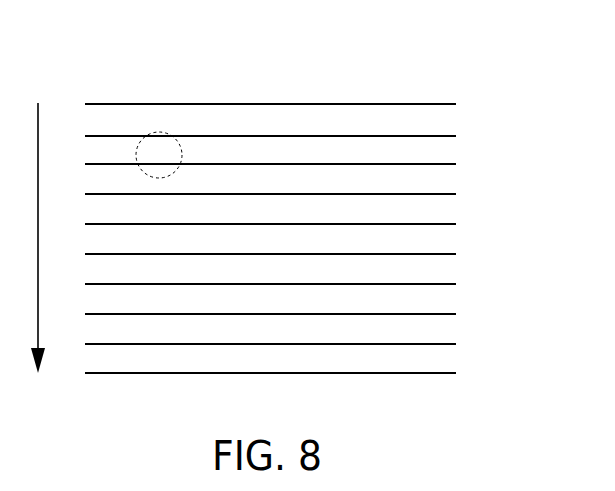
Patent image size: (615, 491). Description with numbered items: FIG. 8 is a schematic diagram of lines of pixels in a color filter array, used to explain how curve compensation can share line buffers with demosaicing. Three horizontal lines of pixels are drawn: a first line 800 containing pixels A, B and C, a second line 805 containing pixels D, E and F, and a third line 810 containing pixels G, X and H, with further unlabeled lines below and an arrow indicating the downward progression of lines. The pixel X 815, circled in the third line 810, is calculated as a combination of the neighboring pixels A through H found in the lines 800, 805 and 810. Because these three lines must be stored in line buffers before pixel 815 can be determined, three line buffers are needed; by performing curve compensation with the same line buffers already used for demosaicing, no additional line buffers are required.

The line of pixels 800 is at (449, 103).
The line of pixels 805 is at (449, 135).
The line of pixels 810 is at (449, 163).
The pixel X 815 is at (144, 137).